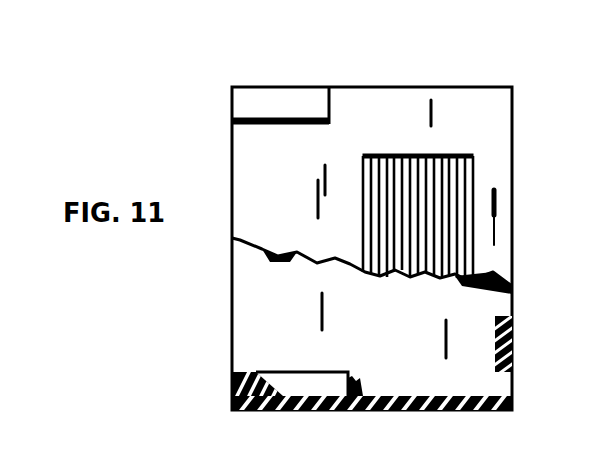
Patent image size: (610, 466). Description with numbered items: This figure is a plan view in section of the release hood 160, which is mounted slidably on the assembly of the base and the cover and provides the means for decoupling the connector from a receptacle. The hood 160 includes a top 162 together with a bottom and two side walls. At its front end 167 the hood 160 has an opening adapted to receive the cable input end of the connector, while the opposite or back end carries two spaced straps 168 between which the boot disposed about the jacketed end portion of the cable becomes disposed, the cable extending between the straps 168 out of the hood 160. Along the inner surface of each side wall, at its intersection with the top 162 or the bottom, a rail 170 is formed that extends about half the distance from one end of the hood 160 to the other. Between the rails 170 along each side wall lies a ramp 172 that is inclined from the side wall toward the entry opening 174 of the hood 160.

The release hood 160 is at (573, 146).
The top 162 is at (367, 108).
The front end 167 is at (232, 137).
The entry opening 174 is at (232, 290).
The ramp 172 is at (256, 373).
The rail 170 is at (333, 372).
The strap 168 is at (512, 338).